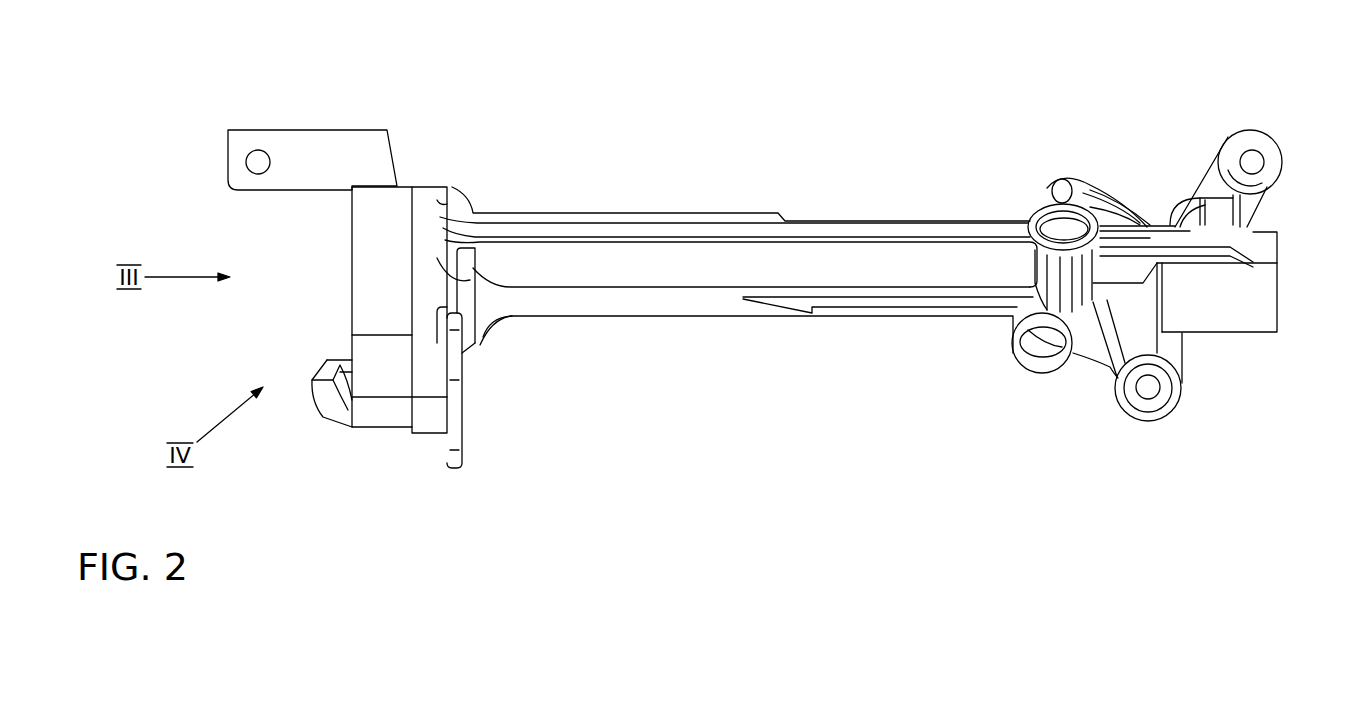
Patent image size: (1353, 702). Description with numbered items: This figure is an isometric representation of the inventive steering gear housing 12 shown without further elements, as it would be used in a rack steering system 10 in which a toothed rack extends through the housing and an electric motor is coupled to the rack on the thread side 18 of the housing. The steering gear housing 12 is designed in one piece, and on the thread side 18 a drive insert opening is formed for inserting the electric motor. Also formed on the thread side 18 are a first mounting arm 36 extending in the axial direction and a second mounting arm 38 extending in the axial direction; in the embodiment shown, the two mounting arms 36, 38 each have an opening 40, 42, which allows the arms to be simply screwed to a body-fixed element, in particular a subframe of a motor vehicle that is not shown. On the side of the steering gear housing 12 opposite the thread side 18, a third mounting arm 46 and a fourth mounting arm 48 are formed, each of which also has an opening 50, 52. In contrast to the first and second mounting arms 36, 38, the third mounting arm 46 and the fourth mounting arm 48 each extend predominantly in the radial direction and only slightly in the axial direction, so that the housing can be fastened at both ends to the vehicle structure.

The rack steering system 10 is at (777, 140).
The steering gear housing 12 is at (608, 257).
The thread side 18 is at (429, 147).
The first mounting arm 36 is at (298, 152).
The second mounting arm 38 is at (325, 398).
The opening 40 is at (237, 162).
The opening 42 is at (341, 421).
The third mounting arm 46 is at (1172, 405).
The fourth mounting arm 48 is at (1235, 147).
The opening 50 is at (1147, 402).
The opening 52 is at (1261, 145).